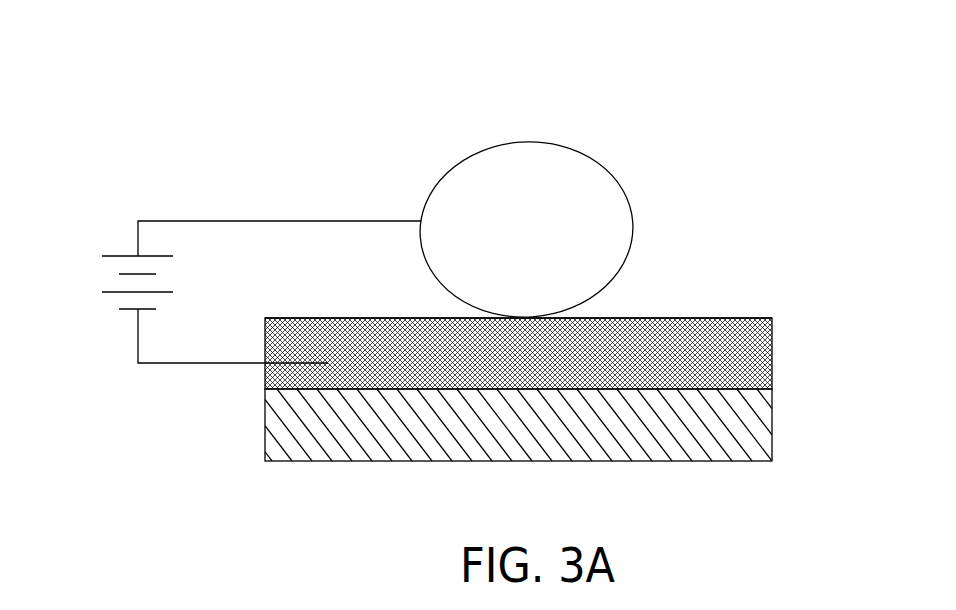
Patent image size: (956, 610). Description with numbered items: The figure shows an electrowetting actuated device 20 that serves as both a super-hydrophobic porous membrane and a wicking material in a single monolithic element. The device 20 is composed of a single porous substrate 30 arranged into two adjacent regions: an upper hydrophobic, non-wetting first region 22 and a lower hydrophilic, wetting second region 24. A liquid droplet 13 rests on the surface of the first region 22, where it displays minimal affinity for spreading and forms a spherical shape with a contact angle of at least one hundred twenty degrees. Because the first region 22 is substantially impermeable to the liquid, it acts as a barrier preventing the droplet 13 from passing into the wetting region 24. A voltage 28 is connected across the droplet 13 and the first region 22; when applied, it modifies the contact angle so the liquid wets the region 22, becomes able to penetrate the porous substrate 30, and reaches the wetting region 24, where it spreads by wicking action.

The liquid droplet 13 is at (580, 153).
The electrowetting actuated device 20 is at (735, 218).
The hydrophobic, non-wetting first region 22 is at (773, 350).
The hydrophilic, wetting second region 24 is at (760, 432).
The voltage 28 is at (93, 288).
The porous substrate 30 is at (664, 318).